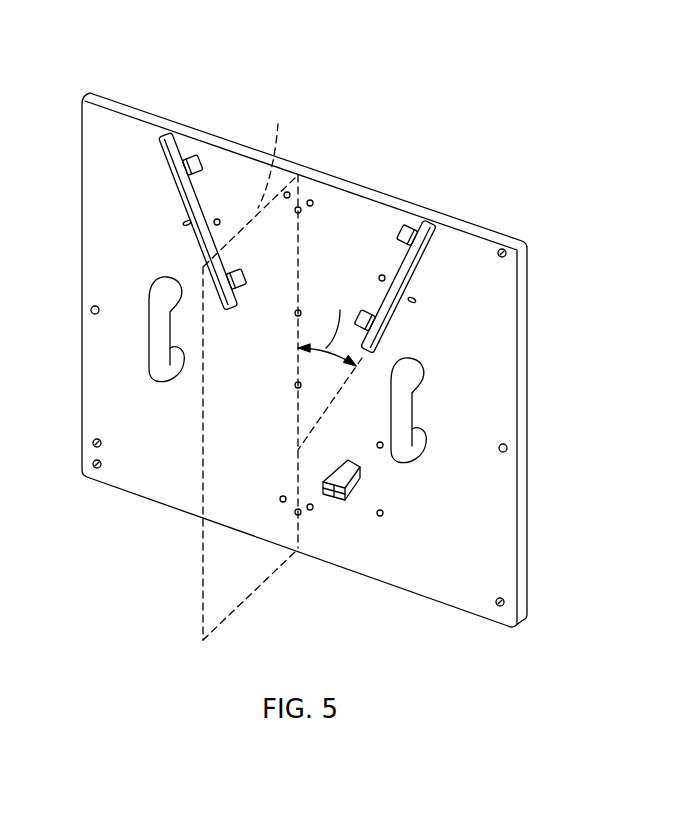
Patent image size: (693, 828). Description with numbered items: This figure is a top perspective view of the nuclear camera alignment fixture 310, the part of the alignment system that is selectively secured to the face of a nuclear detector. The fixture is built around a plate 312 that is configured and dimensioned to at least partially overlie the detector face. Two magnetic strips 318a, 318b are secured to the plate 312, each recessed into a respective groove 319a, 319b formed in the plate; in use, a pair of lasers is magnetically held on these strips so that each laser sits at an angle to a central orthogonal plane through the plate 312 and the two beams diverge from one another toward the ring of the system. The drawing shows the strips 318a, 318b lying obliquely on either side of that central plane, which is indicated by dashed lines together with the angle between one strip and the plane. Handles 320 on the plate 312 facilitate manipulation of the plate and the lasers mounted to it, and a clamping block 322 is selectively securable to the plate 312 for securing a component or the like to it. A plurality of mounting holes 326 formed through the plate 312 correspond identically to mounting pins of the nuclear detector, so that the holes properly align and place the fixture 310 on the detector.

The nuclear camera alignment fixture 310 is at (410, 149).
The plate 312 is at (507, 347).
The magnetic strip 318a is at (198, 208).
The magnetic strip 318b is at (417, 262).
The groove 319a is at (166, 133).
The groove 319b is at (415, 222).
The handle 320 is at (172, 382).
The clamping block 322 is at (333, 500).
The mounting holes 326 is at (92, 308).